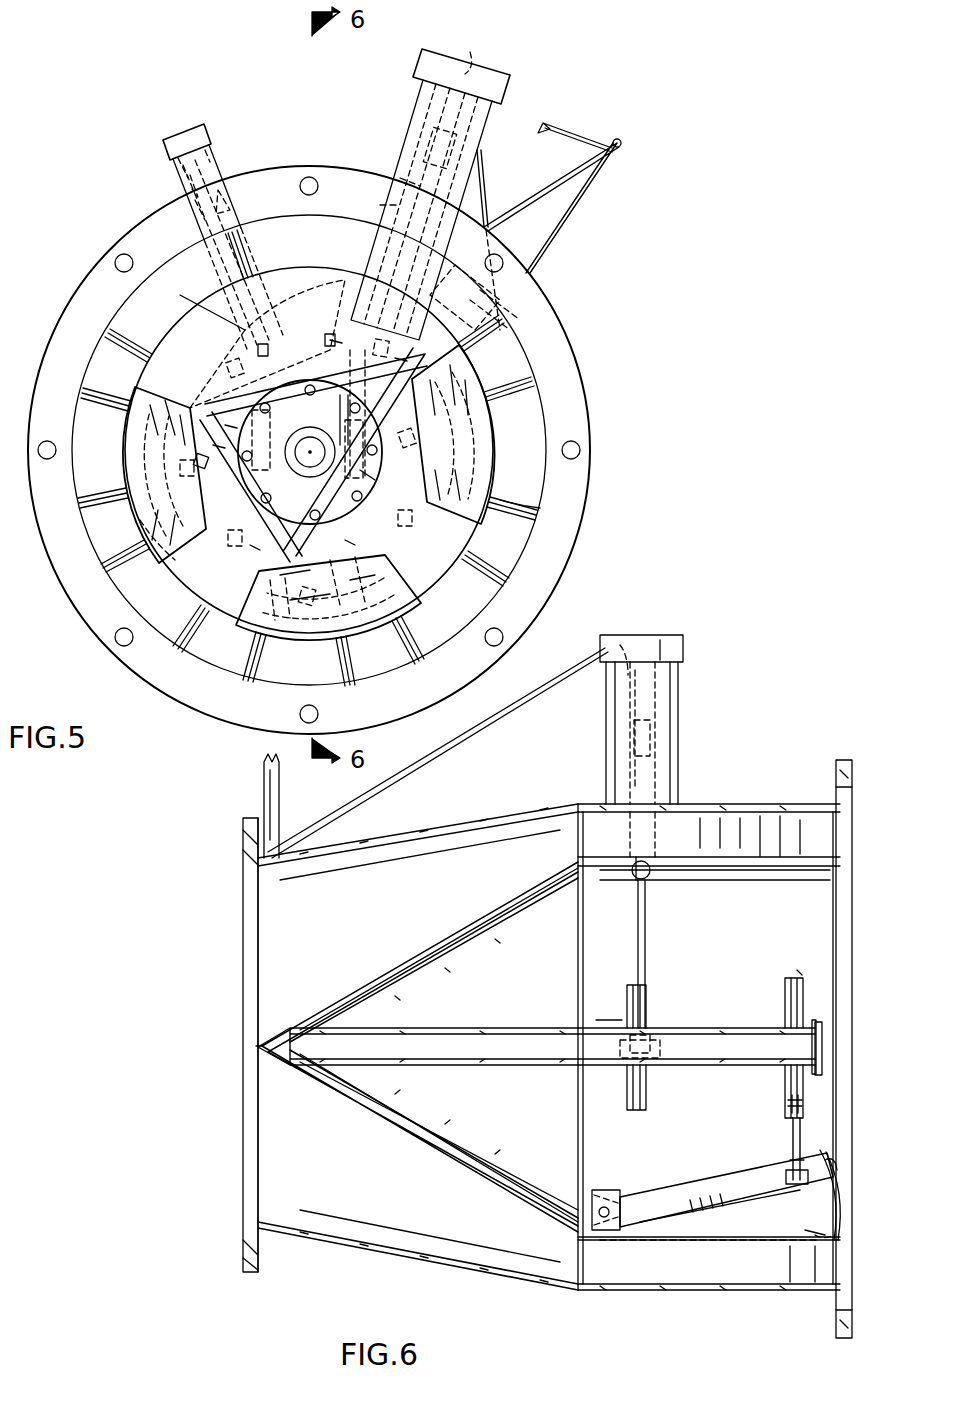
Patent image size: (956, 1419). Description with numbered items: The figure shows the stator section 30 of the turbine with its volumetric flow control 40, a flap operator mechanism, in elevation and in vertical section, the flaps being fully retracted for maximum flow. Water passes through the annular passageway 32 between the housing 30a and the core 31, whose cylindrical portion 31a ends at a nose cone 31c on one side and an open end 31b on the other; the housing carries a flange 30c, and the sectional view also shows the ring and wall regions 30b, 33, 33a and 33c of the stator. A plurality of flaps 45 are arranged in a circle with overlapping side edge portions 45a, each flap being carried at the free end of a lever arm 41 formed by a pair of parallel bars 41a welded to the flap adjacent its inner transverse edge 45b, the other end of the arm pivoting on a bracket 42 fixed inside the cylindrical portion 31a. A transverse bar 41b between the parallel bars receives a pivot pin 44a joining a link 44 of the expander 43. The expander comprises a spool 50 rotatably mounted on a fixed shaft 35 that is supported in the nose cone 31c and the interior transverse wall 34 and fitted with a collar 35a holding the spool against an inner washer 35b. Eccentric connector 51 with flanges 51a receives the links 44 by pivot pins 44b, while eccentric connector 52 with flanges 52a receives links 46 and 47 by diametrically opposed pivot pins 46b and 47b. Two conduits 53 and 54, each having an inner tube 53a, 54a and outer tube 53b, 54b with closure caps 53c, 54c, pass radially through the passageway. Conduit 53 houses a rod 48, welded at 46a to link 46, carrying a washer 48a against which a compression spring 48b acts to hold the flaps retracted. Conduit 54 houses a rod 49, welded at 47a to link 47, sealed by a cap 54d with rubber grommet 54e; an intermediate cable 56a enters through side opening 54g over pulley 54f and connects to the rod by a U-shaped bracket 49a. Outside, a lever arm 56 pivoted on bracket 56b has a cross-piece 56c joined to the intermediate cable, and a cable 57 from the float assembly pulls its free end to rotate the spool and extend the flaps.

In FIG. 6, the stator section 30 is at (695, 743).
In FIG. 6, the housing 30a is at (380, 1260).
In FIG. 5, the outlet flange 30b is at (600, 440).
In FIG. 6, the outlet flange 30b is at (848, 787).
In FIG. 6, the flange 30c is at (243, 866).
In FIG. 6, the core 31 is at (505, 1196).
In FIG. 6, the cylindrical portion 31a is at (665, 1238).
In FIG. 6, the open end 31b is at (805, 1242).
In FIG. 6, the nose cone 31c is at (262, 1045).
In FIG. 5, the annular passageway 32 is at (464, 624).
In FIG. 6, the annular passageway 32 is at (708, 818).
In FIG. 5, the annular housing 33 is at (522, 366).
In FIG. 6, the annular housing 33 is at (768, 820).
In FIG. 5, the housing wall 33a is at (518, 534).
In FIG. 5, the housing inner wall 33c is at (540, 506).
In FIG. 6, the interior transverse wall 34 is at (572, 943).
In FIG. 6, the fixed shaft 35 is at (638, 1036).
In FIG. 6, the collar 35a is at (822, 1016).
In FIG. 6, the inner washer 35b is at (598, 1021).
In FIG. 6, the volumetric flow control 40 is at (715, 1142).
In FIG. 5, the lever arm 41 is at (328, 597).
In FIG. 6, the lever arm 41 is at (665, 1185).
In FIG. 5, the parallel bars 41a is at (384, 571).
In FIG. 6, the parallel bars 41a is at (688, 1202).
In FIG. 5, the transverse bar 41b is at (270, 605).
In FIG. 6, the transverse bar 41b is at (805, 1175).
In FIG. 5, the bracket 42 is at (313, 610).
In FIG. 6, the bracket 42 is at (603, 1190).
In FIG. 5, the expander 43 is at (308, 502).
In FIG. 6, the expander 43 is at (724, 952).
In FIG. 5, the link 44 is at (200, 458).
In FIG. 6, the link 44 is at (803, 1125).
In FIG. 5, the pivot pin 44a is at (295, 332).
In FIG. 6, the pivot pin 44a is at (786, 1166).
In FIG. 5, the pivot pin 44b is at (207, 473).
In FIG. 6, the pivot pin 44b is at (788, 1098).
In FIG. 5, the flap 45 is at (516, 452).
In FIG. 6, the flap 45 is at (840, 1197).
In FIG. 5, the side edge portions 45a is at (165, 550).
In FIG. 6, the inner transverse edge 45b is at (828, 1163).
In FIG. 5, the link 46 is at (240, 366).
In FIG. 5, the weld 46a is at (258, 346).
In FIG. 5, the pivot pin 46b is at (256, 452).
In FIG. 5, the link 47 is at (376, 363).
In FIG. 6, the link 47 is at (646, 922).
In FIG. 6, the weld 47a is at (638, 886).
In FIG. 5, the pivot pin 47b is at (360, 480).
In FIG. 6, the pivot pin 47b is at (615, 1045).
In FIG. 5, the rod 48 is at (190, 198).
In FIG. 5, the washer 48a is at (170, 166).
In FIG. 5, the compression spring 48b is at (215, 185).
In FIG. 5, the rod 49 is at (380, 212).
In FIG. 6, the rod 49 is at (650, 875).
In FIG. 5, the U-shaped bracket 49a is at (422, 138).
In FIG. 6, the U-shaped bracket 49a is at (630, 734).
In FIG. 6, the spool 50 is at (710, 1030).
In FIG. 6, the eccentric connector 51 is at (766, 983).
In FIG. 6, the flanges 51a is at (807, 978).
In FIG. 6, the eccentric connector 52 is at (650, 998).
In FIG. 6, the flanges 52a is at (630, 971).
In FIG. 5, the conduit 53 is at (163, 180).
In FIG. 5, the inner tube 53a is at (205, 300).
In FIG. 5, the outer tube 53b is at (214, 146).
In FIG. 5, the closure cap 53c is at (180, 133).
In FIG. 5, the conduit 54 is at (406, 97).
In FIG. 6, the conduit 54 is at (688, 687).
In FIG. 5, the inner tube 54a is at (368, 241).
In FIG. 5, the outer tube 54b is at (428, 92).
In FIG. 5, the closure cap 54c is at (494, 62).
In FIG. 5, the cap 54d is at (447, 200).
In FIG. 5, the rubber grommet 54e is at (398, 172).
In FIG. 5, the pulley 54f is at (452, 58).
In FIG. 6, the pulley 54f is at (618, 672).
In FIG. 5, the side opening 54g is at (492, 78).
In FIG. 6, the side opening 54g is at (595, 647).
In FIG. 5, the lever arm 56 is at (574, 198).
In FIG. 6, the lever arm 56 is at (262, 792).
In FIG. 5, the intermediate cable 56a is at (492, 158).
In FIG. 6, the intermediate cable 56a is at (404, 782).
In FIG. 5, the bracket 56b is at (512, 335).
In FIG. 5, the cross-piece 56c is at (508, 280).
In FIG. 5, the cable 57 is at (545, 128).